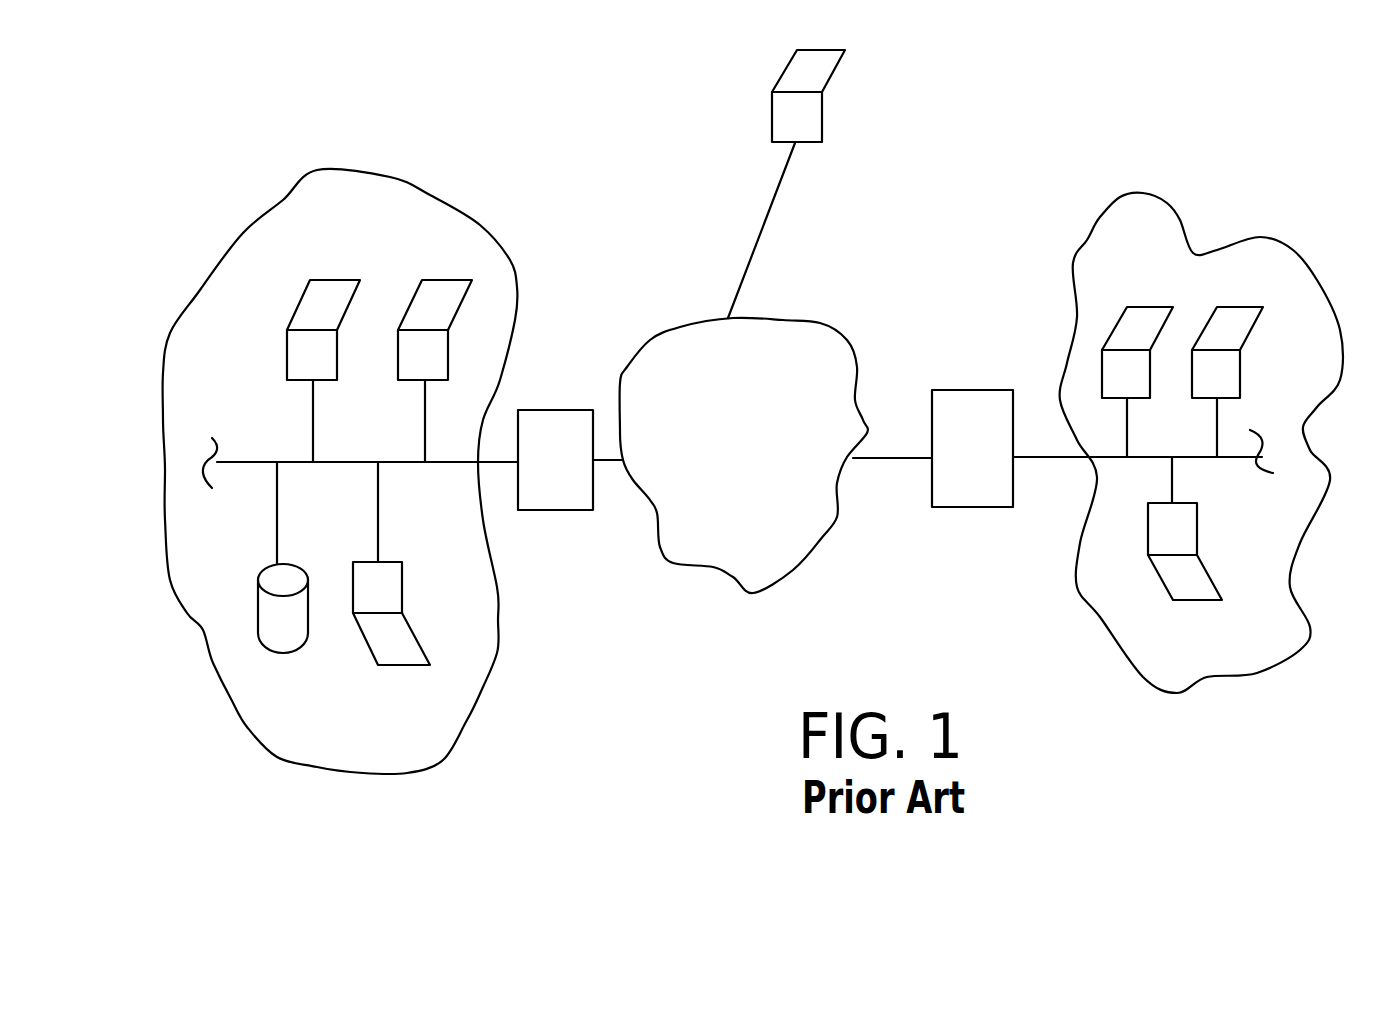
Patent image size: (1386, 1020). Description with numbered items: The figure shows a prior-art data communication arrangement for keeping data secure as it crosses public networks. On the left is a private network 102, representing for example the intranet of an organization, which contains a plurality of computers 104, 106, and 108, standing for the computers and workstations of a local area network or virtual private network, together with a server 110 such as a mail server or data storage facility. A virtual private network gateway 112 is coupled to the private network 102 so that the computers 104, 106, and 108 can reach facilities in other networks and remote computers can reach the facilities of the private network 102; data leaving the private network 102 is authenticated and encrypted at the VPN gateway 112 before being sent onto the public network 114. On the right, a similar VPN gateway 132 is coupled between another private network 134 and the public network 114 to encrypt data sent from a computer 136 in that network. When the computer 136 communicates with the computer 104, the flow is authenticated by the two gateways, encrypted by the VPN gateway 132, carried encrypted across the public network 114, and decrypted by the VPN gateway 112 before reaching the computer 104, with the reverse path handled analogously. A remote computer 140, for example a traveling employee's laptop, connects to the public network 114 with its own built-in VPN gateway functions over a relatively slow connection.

The private network 102 is at (390, 177).
The computer 104 is at (330, 307).
The computer 106 is at (398, 637).
The computer 108 is at (433, 303).
The server 110 is at (273, 630).
The VPN gateway 112 is at (570, 435).
The public network 114 is at (744, 455).
The VPN gateway 132 is at (985, 407).
The private network 134 is at (1180, 213).
The computer 136 is at (1148, 320).
The remote computer 140 is at (815, 73).